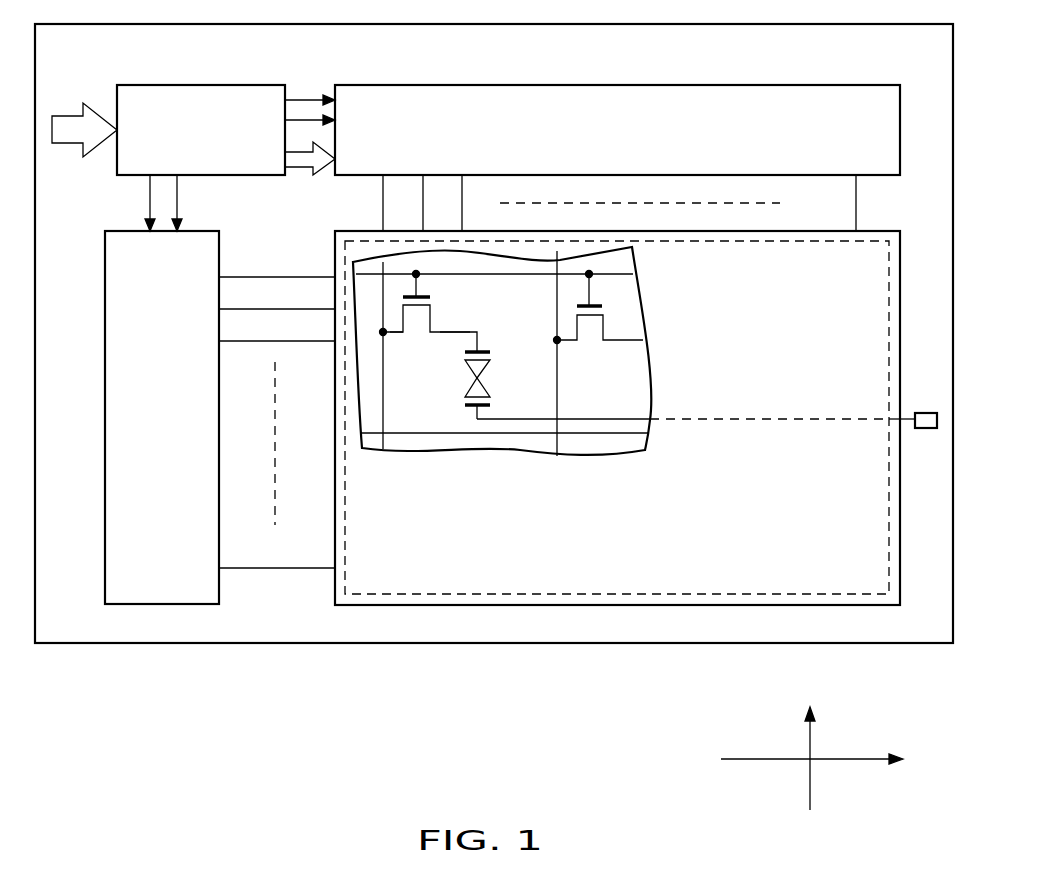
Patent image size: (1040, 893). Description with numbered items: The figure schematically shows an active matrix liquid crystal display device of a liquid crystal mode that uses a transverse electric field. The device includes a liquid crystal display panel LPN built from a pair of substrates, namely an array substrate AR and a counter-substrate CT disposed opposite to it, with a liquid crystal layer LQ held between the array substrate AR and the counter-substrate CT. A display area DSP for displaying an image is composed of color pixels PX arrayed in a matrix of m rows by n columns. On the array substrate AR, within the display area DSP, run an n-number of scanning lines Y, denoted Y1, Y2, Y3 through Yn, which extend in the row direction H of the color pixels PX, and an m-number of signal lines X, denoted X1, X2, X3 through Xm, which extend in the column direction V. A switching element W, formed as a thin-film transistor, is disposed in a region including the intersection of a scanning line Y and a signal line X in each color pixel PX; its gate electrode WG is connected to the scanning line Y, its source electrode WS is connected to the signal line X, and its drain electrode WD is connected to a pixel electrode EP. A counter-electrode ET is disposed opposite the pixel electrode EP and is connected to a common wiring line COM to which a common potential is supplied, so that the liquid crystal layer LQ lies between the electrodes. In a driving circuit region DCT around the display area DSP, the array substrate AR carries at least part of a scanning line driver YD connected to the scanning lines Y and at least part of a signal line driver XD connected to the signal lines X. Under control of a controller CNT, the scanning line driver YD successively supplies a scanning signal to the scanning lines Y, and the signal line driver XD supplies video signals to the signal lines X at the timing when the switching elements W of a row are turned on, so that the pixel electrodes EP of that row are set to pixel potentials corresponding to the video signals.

The array substrate AR is at (908, 627).
The controller CNT is at (198, 106).
The signal line driver XD is at (846, 108).
The scanning line driver YD is at (105, 422).
The display area DSP is at (675, 594).
The liquid crystal display panel LPN is at (456, 684).
The driving circuit region DCT is at (297, 620).
The color pixel PX is at (424, 418).
The signal line X is at (385, 407).
The scanning line Y is at (612, 275).
The signal line X1 is at (367, 203).
The signal line X2 is at (406, 203).
The signal line X3 is at (445, 203).
The signal line Xm is at (834, 203).
The scanning line Y1 is at (277, 264).
The scanning line Y2 is at (277, 294).
The scanning line Y3 is at (277, 326).
The scanning line Yn is at (277, 554).
The switching element W is at (438, 340).
The gate electrode WG is at (419, 281).
The source electrode WS is at (397, 334).
The drain electrode WD is at (450, 334).
The pixel electrode EP is at (495, 356).
The liquid crystal layer LQ is at (490, 388).
The counter-electrode ET is at (468, 407).
The common wiring line COM is at (913, 430).
The counter-substrate CT is at (893, 372).
The column direction V is at (810, 741).
The row direction H is at (824, 759).